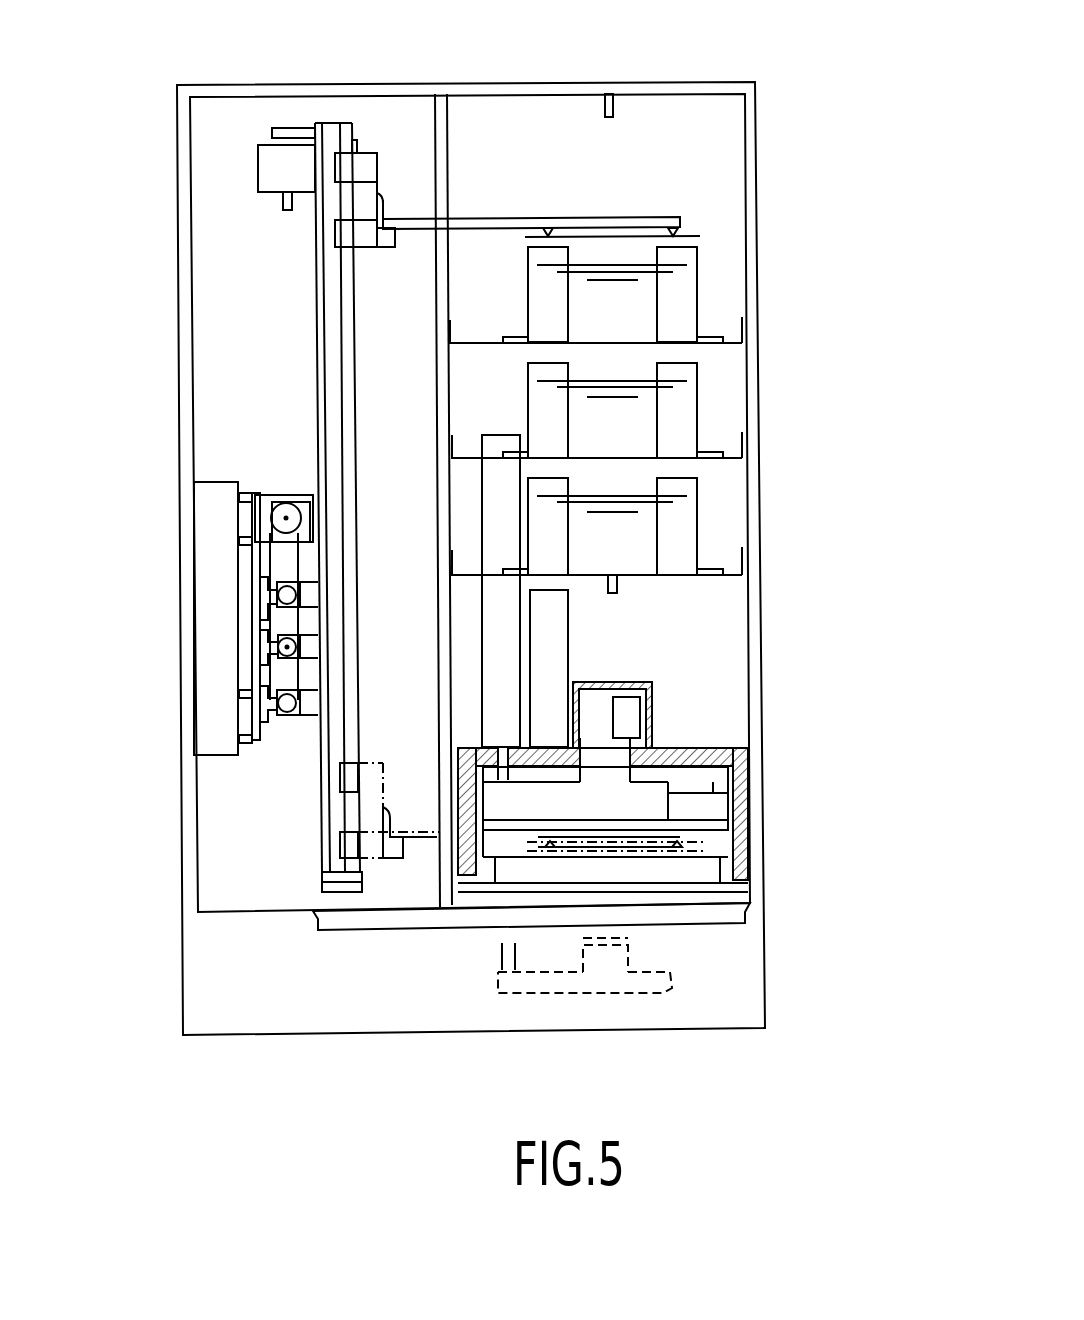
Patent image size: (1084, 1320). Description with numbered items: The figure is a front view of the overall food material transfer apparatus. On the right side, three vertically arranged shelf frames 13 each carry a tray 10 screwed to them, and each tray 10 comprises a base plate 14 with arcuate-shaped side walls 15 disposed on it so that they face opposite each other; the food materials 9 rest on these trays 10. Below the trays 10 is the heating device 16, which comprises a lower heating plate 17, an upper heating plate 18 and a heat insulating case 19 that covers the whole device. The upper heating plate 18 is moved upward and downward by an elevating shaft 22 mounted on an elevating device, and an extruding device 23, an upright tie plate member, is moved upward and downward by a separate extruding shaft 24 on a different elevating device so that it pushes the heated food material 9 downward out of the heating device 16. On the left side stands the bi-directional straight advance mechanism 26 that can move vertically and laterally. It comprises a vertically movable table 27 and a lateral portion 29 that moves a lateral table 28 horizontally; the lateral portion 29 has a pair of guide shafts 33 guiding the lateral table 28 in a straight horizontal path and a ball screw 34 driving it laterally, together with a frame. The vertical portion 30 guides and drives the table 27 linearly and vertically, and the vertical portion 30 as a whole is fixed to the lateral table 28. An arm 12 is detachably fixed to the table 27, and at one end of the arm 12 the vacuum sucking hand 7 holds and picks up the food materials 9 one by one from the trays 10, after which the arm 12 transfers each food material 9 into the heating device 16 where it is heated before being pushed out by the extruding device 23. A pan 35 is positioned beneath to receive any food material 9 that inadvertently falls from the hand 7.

The vacuum sucking hand 7 is at (637, 217).
The food material 9 is at (612, 265).
The tray 10 is at (710, 258).
The arm 12 is at (487, 217).
The shelf frame 13 is at (744, 318).
The base plate 14 is at (712, 297).
The arcuate-shaped side wall 15 is at (711, 343).
The heating device 16 is at (497, 763).
The lower heating plate 17 is at (703, 871).
The upper heating plate 18 is at (703, 803).
The heat insulating case 19 is at (745, 748).
The elevating shaft 22 is at (545, 630).
The extruding device 23 is at (600, 787).
The extruding shaft 24 is at (498, 775).
The bi-directional straight advance mechanism 26 is at (327, 122).
The vertically movable table 27 is at (345, 233).
The lateral table 28 is at (208, 528).
The lateral portion 29 is at (293, 717).
The vertical portion 30 is at (335, 396).
The guide shaft 33 is at (280, 588).
The ball screw 34 is at (280, 645).
The pan 35 is at (717, 922).